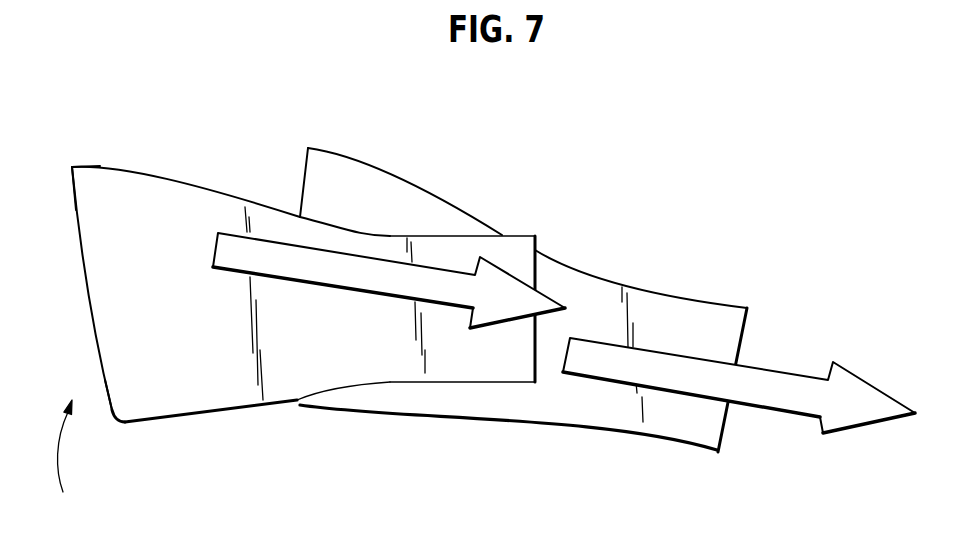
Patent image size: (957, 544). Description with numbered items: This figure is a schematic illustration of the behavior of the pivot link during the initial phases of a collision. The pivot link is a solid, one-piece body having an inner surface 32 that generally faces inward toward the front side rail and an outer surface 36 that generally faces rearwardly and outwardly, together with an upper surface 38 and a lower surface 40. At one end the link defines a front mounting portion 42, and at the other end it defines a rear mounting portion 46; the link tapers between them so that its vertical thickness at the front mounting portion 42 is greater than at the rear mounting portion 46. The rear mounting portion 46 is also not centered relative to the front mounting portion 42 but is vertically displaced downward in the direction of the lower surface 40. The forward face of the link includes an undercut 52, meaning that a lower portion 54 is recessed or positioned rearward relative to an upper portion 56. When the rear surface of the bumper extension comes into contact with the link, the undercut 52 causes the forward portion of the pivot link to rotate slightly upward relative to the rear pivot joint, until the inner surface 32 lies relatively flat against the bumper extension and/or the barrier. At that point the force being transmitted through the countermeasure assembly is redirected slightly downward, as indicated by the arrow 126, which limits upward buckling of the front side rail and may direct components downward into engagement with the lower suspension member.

The inner surface 32 is at (300, 176).
The outer surface 36 is at (392, 345).
The upper surface 38 is at (246, 202).
The lower surface 40 is at (236, 413).
The front mounting portion 42 is at (160, 172).
The rear mounting portion 46 is at (700, 297).
The undercut 52 is at (73, 462).
The lower portion 54 is at (103, 390).
The upper portion 56 is at (72, 187).
The arrow 126 is at (782, 380).